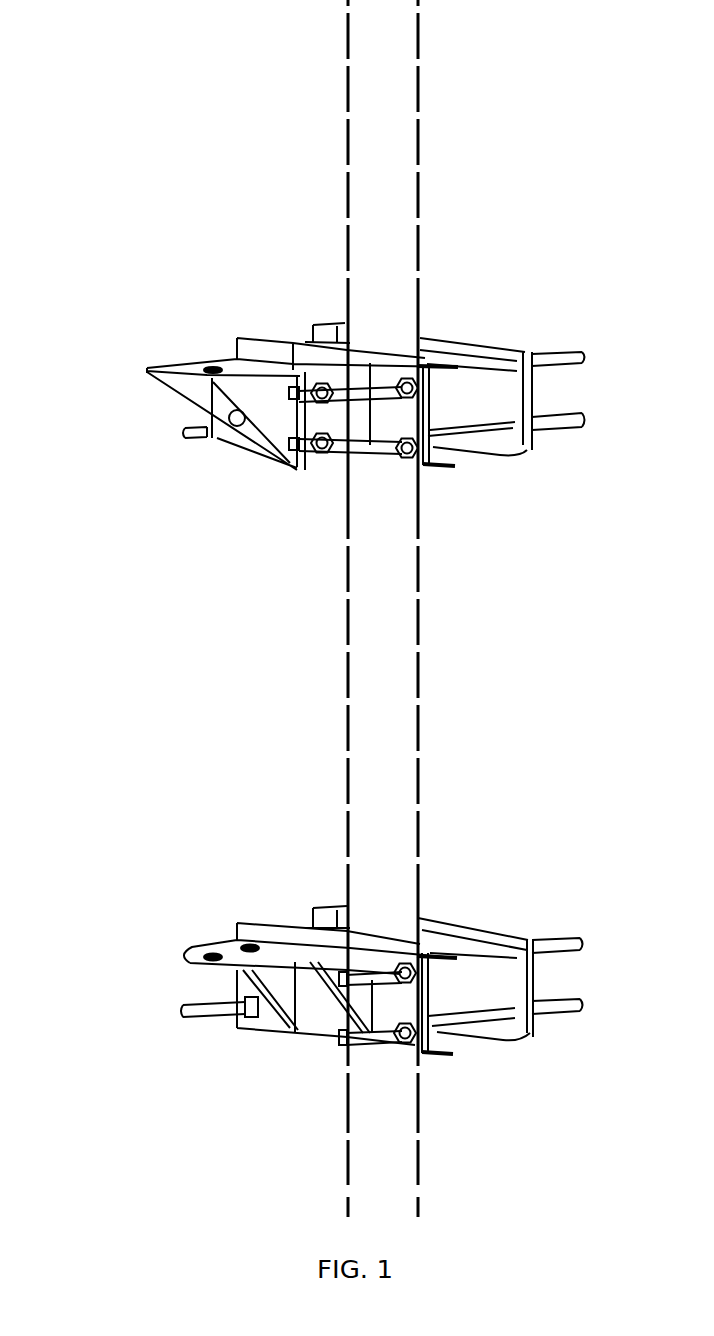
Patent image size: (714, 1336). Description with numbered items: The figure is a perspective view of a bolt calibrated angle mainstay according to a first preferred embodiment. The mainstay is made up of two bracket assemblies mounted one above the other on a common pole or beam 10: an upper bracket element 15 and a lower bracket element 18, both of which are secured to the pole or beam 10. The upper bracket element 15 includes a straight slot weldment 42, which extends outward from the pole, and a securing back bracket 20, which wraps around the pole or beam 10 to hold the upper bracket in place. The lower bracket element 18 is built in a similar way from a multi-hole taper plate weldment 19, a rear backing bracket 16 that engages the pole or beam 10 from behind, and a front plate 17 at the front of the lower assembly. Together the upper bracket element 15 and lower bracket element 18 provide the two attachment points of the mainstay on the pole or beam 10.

The common pole or beam 10 is at (423, 130).
The upper bracket element 15 is at (320, 269).
The straight slot weldment 42 is at (150, 371).
The securing back bracket 20 is at (483, 340).
The lower bracket element 18 is at (325, 962).
The multi-hole taper plate weldment 19 is at (177, 953).
The rear backing bracket 16 is at (441, 923).
The front plate 17 is at (402, 1003).